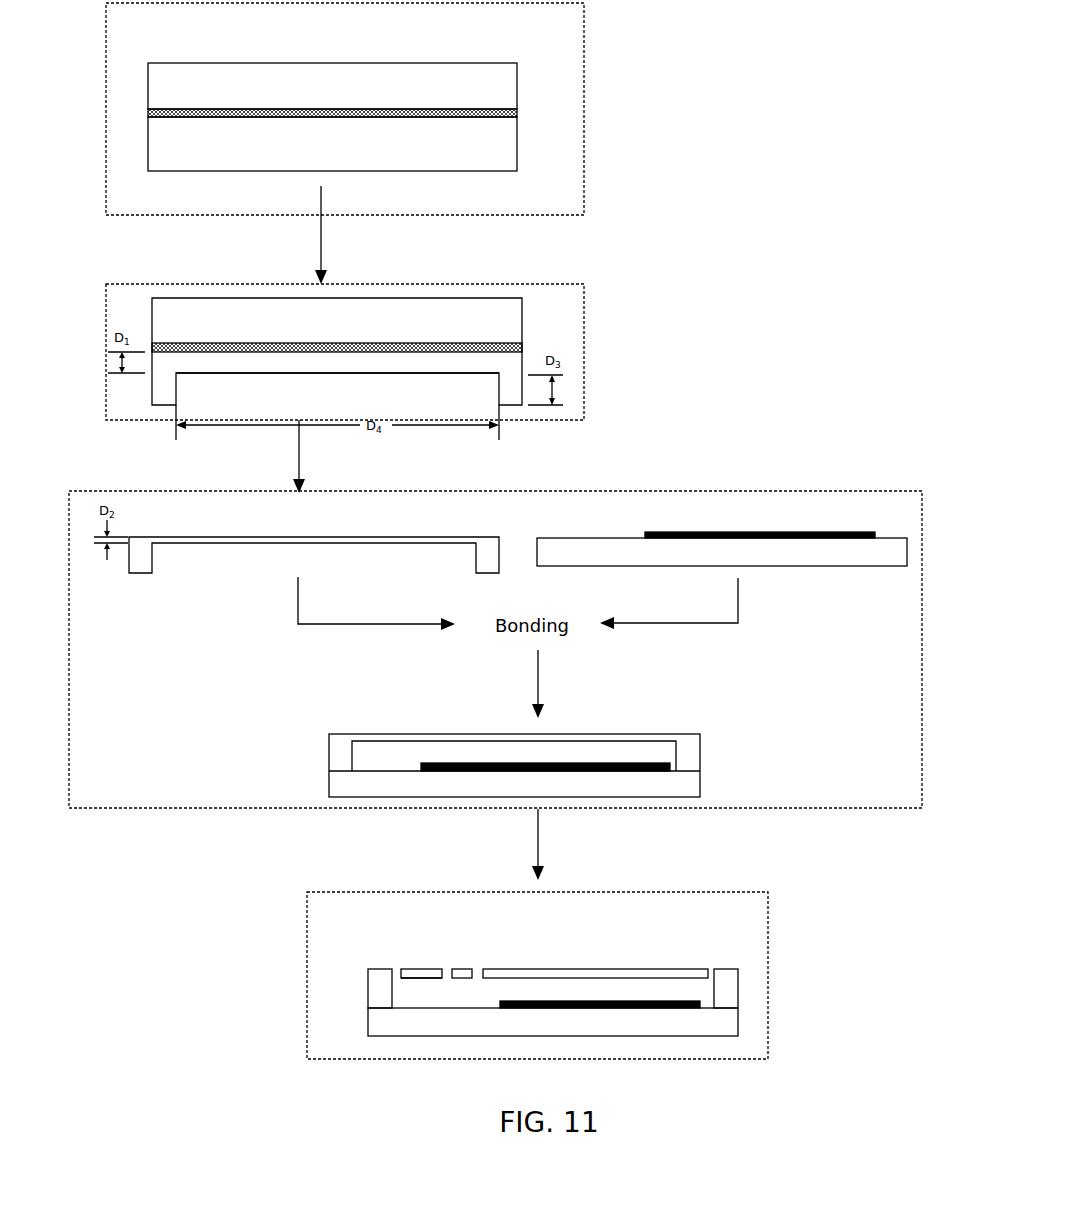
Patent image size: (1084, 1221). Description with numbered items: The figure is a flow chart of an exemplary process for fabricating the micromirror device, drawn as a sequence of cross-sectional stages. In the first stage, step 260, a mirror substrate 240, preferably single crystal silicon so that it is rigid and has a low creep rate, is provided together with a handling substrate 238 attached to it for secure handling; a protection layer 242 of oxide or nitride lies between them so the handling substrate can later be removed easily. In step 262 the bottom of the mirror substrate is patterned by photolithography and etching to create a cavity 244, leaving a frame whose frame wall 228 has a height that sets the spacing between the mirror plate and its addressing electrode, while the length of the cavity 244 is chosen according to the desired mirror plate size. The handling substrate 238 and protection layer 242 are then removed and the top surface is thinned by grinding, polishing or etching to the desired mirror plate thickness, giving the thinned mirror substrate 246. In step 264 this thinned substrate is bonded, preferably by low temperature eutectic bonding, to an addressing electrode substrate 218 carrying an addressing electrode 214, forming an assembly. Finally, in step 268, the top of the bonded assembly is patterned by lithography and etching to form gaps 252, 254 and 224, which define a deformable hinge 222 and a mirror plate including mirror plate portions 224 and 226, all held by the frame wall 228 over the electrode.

The addressing electrode 214 is at (720, 530).
The addressing electrode substrate 218 is at (773, 555).
The deformable hinge 222 is at (462, 970).
The mirror plate portion / gap 224 is at (480, 970).
The mirror plate portion 226 is at (413, 974).
The frame wall 228 is at (375, 991).
The handling substrate 238 is at (373, 80).
The mirror substrate 240 is at (373, 160).
The protection layer 242 is at (518, 113).
The recess 244 is at (380, 362).
The thinned mirror substrate 246 is at (362, 540).
The gap 252 is at (397, 968).
The gap 254 is at (446, 968).
The step of providing mirror substrate 260 is at (583, 123).
The step of patterning cavity 262 is at (583, 350).
The bonding step 264 is at (637, 491).
The step of patterning hinge and mirror plate 268 is at (769, 955).